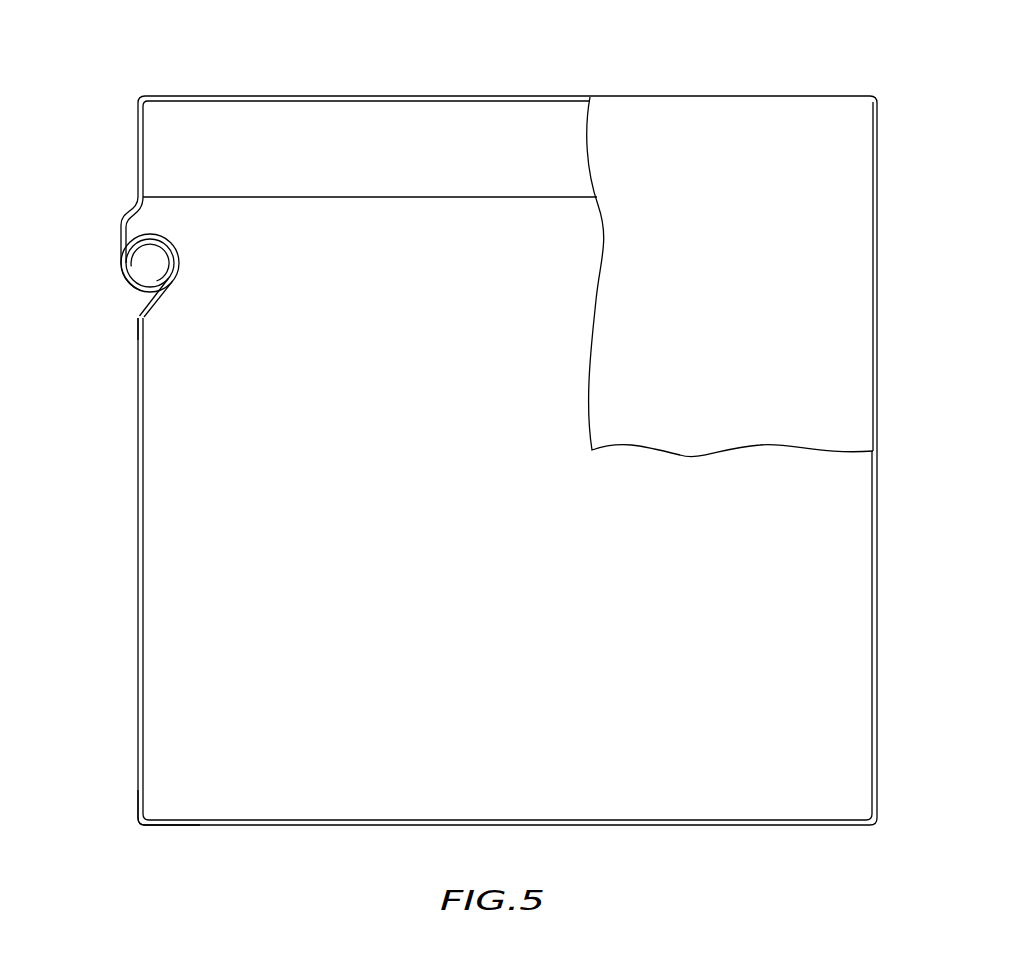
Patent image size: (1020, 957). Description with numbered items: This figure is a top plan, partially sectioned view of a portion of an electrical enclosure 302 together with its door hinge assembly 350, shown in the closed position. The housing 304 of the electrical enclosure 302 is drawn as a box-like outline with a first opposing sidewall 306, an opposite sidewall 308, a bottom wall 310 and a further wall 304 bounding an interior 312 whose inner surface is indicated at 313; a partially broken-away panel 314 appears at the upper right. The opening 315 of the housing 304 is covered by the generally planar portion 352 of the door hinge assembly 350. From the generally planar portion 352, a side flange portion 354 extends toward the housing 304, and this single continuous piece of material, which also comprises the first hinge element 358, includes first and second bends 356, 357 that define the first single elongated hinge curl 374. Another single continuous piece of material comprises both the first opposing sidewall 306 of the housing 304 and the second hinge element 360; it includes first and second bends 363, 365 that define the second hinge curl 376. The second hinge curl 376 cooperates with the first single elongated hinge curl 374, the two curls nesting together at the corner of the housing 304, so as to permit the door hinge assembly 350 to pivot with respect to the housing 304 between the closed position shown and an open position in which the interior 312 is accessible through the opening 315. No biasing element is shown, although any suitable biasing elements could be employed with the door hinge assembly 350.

The electrical enclosure 302 is at (670, 873).
The housing 304 is at (224, 834).
The first opposing sidewall 306 is at (145, 548).
The side wall 308 is at (878, 725).
The bottom panel 310 is at (395, 828).
The interior 312 is at (364, 465).
The inner surface 313 is at (238, 637).
The panel 314 is at (855, 287).
The opening 315 is at (294, 198).
The door hinge assembly 350 is at (99, 222).
The generally planar portion 352 is at (218, 95).
The side flange portion 354 is at (138, 122).
The first bend 356 is at (122, 222).
The second bend 357 is at (132, 293).
The first hinge element 358 is at (113, 271).
The second hinge element 360 is at (183, 250).
The first bend 363 is at (150, 320).
The second bend 365 is at (181, 263).
The first single elongated hinge curl 374 is at (130, 308).
The second hinge curl 376 is at (164, 238).